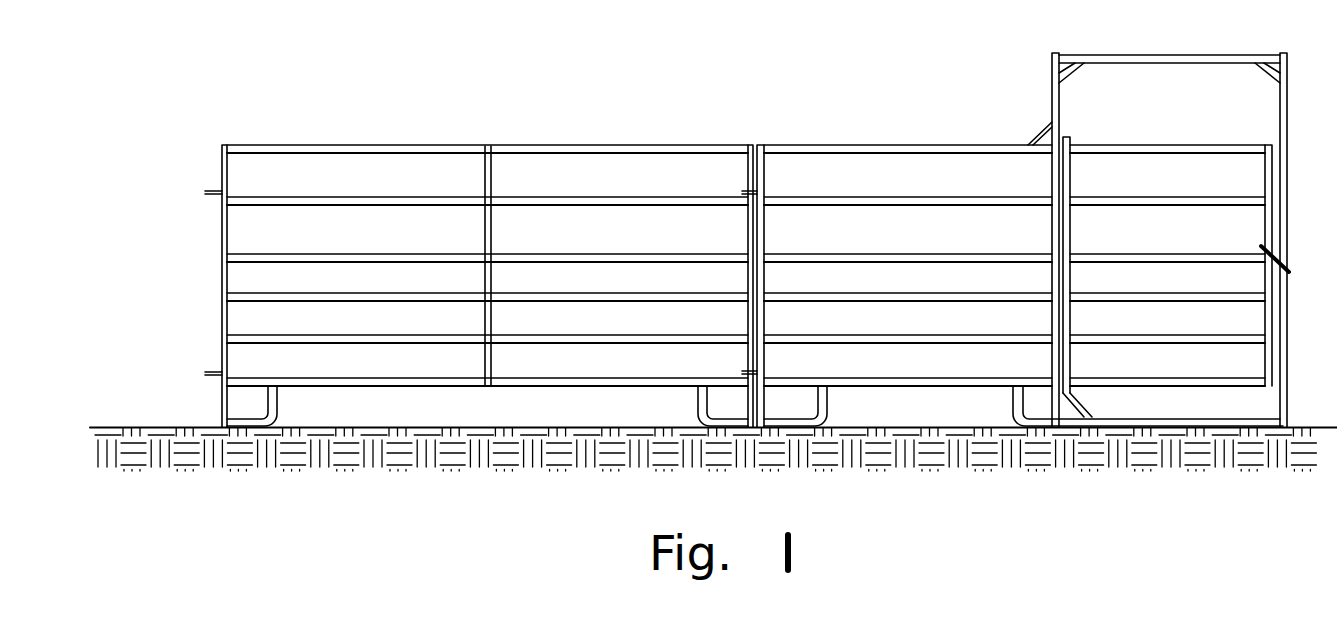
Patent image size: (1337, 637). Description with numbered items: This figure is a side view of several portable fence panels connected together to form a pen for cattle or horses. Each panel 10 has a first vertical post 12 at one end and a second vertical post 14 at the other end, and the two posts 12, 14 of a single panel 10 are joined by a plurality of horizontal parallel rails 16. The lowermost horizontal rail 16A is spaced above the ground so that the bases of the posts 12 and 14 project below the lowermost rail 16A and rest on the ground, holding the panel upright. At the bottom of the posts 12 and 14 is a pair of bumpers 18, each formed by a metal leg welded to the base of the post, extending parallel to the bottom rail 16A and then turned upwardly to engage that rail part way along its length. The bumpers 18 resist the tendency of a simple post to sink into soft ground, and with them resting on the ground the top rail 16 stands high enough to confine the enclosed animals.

The panel 10 is at (665, 136).
The first vertical post 12 is at (222, 287).
The second vertical post 14 is at (748, 285).
The horizontal parallel rails 16 is at (509, 150).
The lowermost horizontal rail 16A is at (526, 378).
The bumpers 18 is at (281, 400).